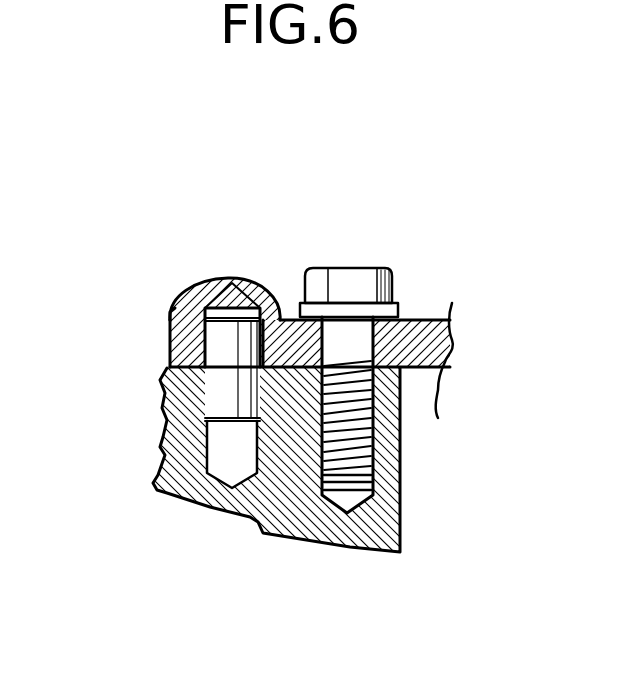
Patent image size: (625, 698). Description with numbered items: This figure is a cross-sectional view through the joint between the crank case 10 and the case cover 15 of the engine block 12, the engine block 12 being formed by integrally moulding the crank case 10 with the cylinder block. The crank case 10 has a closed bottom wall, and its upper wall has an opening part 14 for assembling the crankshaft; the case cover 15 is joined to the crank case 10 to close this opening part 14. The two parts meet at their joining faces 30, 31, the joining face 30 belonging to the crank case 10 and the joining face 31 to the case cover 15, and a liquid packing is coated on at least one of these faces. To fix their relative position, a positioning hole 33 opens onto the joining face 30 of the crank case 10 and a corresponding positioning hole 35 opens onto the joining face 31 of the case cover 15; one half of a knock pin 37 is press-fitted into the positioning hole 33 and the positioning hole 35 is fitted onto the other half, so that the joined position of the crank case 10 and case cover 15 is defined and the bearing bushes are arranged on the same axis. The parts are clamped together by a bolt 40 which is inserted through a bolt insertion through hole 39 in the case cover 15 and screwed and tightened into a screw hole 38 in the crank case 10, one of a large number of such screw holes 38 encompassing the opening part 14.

The crank case 10 is at (282, 507).
The engine block 12 is at (327, 548).
The opening part 14 is at (402, 398).
The case cover 15 is at (210, 280).
The joining face 30 is at (173, 356).
The joining face 31 is at (287, 378).
The positioning hole 33 is at (204, 392).
The positioning hole 35 is at (236, 292).
The knock pin 37 is at (174, 348).
The screw hole 38 is at (373, 462).
The bolt insertion through hole 39 is at (362, 360).
The bolt 40 is at (360, 280).